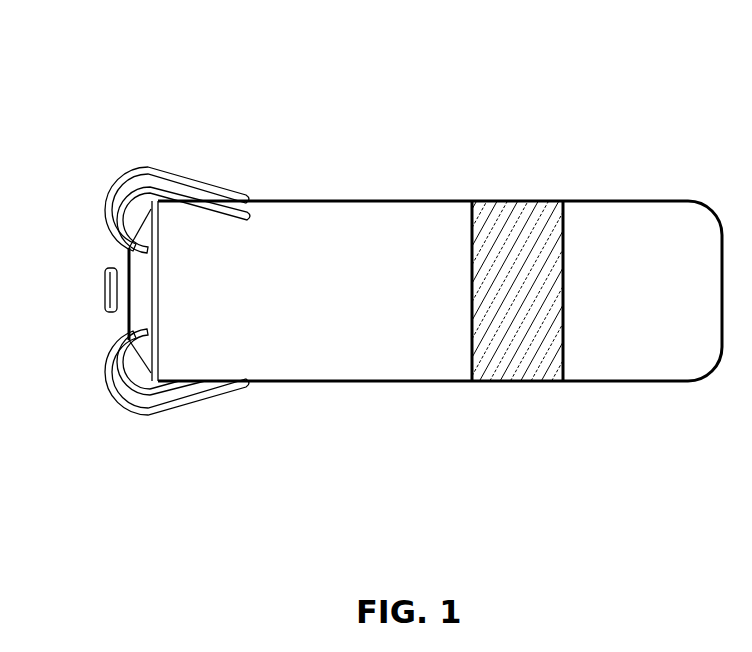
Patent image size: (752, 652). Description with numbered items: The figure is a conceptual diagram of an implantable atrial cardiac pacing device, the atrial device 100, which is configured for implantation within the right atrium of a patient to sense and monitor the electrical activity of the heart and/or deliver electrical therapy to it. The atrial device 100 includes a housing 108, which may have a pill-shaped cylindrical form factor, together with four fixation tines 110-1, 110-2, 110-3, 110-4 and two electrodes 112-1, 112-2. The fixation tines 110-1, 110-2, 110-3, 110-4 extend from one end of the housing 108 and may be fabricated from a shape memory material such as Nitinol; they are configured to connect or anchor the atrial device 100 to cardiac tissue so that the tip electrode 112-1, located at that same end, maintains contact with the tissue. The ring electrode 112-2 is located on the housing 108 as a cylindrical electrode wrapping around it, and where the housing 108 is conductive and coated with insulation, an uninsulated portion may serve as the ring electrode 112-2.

The atrial device 100 is at (449, 58).
The housing 108 is at (406, 201).
The fixation tine 110-1 is at (167, 172).
The fixation tine 110-2 is at (255, 213).
The fixation tine 110-3 is at (215, 395).
The fixation tine 110-4 is at (143, 407).
The tip electrode 112-1 is at (105, 290).
The ring electrode 112-2 is at (521, 201).